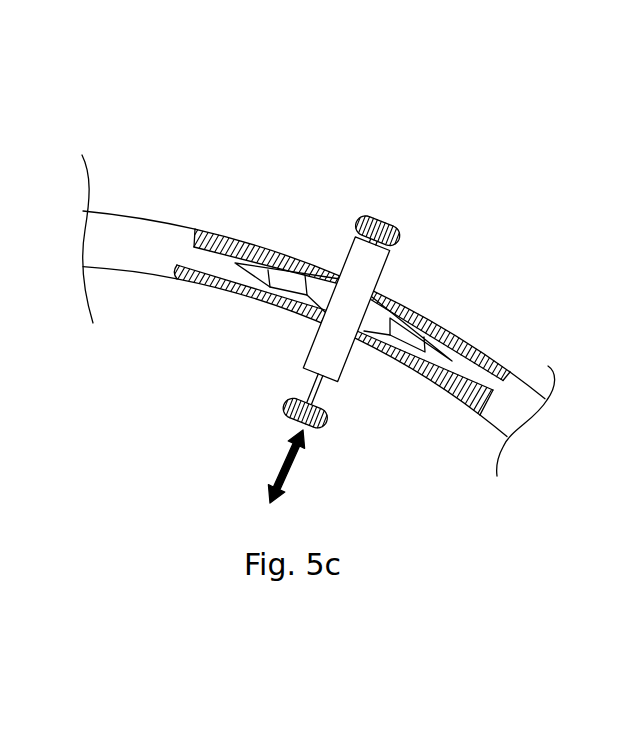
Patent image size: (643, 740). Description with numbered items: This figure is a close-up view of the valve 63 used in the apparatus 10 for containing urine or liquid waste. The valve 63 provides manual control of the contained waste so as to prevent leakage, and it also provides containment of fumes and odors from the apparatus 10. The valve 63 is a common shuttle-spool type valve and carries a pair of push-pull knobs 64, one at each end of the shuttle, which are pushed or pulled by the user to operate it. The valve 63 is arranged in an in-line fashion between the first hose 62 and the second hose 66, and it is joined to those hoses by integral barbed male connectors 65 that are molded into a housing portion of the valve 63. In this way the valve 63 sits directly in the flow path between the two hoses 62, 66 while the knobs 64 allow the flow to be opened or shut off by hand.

The apparatus 10 is at (550, 195).
The first hose 62 is at (523, 380).
The valve 63 is at (350, 351).
The push-pull knobs 64 is at (387, 225).
The integral barbed male connectors 65 is at (288, 283).
The second hose 66 is at (98, 220).